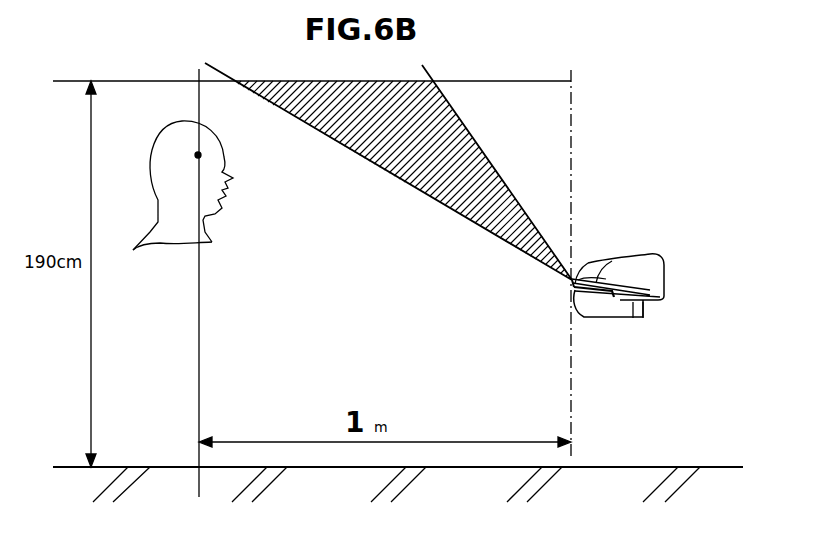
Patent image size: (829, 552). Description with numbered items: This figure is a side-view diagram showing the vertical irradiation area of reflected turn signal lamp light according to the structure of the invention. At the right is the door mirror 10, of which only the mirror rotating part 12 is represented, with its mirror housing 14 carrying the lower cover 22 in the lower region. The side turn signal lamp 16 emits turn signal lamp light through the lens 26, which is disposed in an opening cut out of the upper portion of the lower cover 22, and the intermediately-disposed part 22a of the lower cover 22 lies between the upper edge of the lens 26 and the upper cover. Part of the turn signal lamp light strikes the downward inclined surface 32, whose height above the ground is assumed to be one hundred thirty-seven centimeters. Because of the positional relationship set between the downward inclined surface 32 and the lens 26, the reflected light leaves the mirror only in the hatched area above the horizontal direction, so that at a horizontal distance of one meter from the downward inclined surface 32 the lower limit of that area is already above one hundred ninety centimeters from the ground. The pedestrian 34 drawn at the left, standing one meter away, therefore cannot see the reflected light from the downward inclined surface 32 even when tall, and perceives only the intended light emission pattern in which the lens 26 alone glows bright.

The door mirror 10 is at (662, 273).
The mirror rotating part 12 is at (662, 273).
The mirror housing 14 is at (652, 278).
The side turn signal lamp 16 is at (606, 326).
The lens 26 is at (578, 285).
The lower cover 22 is at (618, 315).
The intermediately-disposed part 22a is at (600, 284).
The downward inclined surface 32 is at (583, 272).
The pedestrian 34 is at (173, 222).